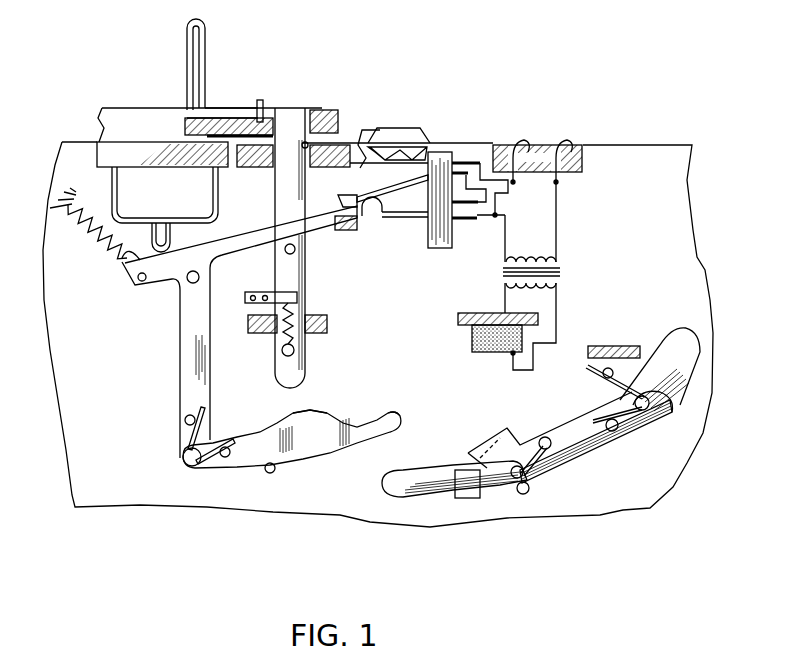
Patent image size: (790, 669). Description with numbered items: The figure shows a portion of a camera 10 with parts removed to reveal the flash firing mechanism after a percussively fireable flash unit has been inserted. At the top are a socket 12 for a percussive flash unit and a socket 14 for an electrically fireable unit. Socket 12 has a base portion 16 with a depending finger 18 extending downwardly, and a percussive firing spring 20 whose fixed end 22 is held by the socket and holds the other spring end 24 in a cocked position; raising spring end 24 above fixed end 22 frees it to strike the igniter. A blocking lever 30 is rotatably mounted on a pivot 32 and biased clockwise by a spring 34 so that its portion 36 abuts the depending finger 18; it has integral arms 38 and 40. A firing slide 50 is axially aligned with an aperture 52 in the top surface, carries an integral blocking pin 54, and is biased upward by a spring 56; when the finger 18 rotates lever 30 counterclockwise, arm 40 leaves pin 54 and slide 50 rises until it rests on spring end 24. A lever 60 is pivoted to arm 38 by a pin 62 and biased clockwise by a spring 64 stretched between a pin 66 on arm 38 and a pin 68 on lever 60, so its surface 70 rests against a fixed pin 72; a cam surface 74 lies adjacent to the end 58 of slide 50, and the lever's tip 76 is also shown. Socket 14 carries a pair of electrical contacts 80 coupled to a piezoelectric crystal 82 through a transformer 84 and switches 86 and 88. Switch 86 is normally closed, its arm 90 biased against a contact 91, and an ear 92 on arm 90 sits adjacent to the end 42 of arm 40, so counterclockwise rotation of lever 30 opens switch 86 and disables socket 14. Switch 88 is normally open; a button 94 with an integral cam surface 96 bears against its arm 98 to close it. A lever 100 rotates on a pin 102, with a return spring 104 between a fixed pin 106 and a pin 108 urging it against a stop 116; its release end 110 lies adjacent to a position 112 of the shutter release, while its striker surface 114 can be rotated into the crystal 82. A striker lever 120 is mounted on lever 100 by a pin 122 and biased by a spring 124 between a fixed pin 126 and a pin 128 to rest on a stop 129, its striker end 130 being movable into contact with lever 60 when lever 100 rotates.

The camera 10 is at (140, 520).
The socket 12 is at (116, 110).
The socket 14 is at (498, 143).
The base portion 16 is at (117, 182).
The depending finger 18 is at (160, 228).
The percussive firing spring 20 is at (207, 50).
The fixed end 22 is at (262, 100).
The spring end 24 is at (240, 88).
The blocking lever 30 is at (226, 321).
The pivot 32 is at (190, 281).
The spring 34 is at (90, 240).
The portion 36 is at (120, 258).
The arm 38 is at (187, 380).
The arm 40 is at (243, 232).
The end 42 is at (347, 222).
The firing slide 50 is at (298, 115).
The aperture 52 is at (337, 143).
The blocking pin 54 is at (285, 252).
The spring 56 is at (320, 323).
The end 58 is at (305, 358).
The lever 60 is at (284, 462).
The pin 62 is at (188, 463).
The spring 64 is at (212, 462).
The pin 66 is at (186, 420).
The pin 68 is at (226, 458).
The surface 70 is at (360, 442).
The fixed pin 72 is at (309, 472).
The cam surface 74 is at (330, 410).
The lever tip 76 is at (401, 430).
The electrical contacts 80 is at (560, 138).
The piezoelectric crystal 82 is at (488, 352).
The transformer 84 is at (562, 268).
The switch 86 is at (421, 228).
The switch 88 is at (404, 216).
The arm 90 is at (400, 178).
The contact 91 is at (372, 220).
The ear 92 is at (342, 200).
The button 94 is at (415, 137).
The cam surface 96 is at (388, 148).
The arm 98 is at (366, 138).
The lever 100 is at (642, 396).
The pin 102 is at (672, 403).
The return spring 104 is at (597, 386).
The fixed pin 106 is at (603, 372).
The pin 108 is at (618, 428).
The release end 110 is at (690, 338).
The position of the shutter release mechanism 112 is at (622, 324).
The striker surface 114 is at (500, 432).
The stop 116 is at (526, 495).
The striker lever 120 is at (431, 516).
The pin 122 is at (516, 480).
The spring 124 is at (545, 450).
The fixed pin 126 is at (555, 410).
The pin 128 is at (483, 498).
The stop 129 is at (452, 498).
The striker end 130 is at (388, 482).